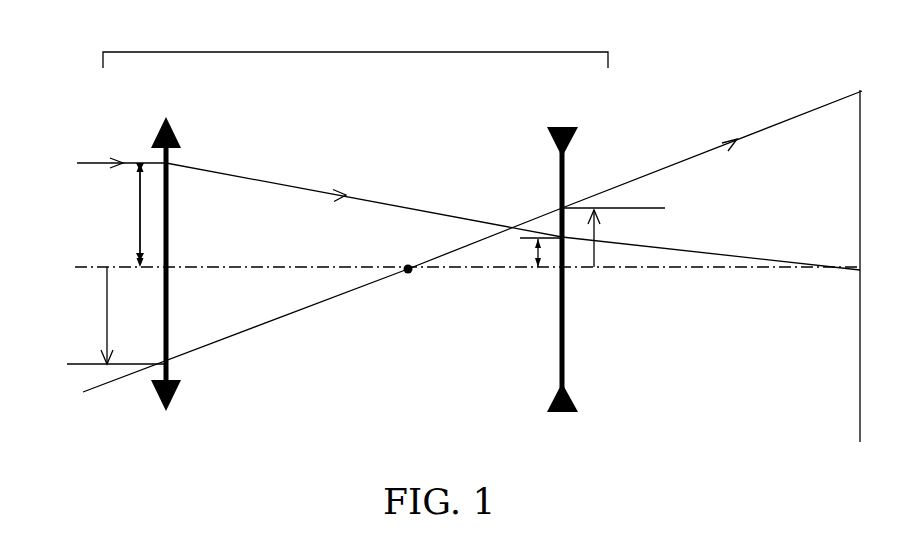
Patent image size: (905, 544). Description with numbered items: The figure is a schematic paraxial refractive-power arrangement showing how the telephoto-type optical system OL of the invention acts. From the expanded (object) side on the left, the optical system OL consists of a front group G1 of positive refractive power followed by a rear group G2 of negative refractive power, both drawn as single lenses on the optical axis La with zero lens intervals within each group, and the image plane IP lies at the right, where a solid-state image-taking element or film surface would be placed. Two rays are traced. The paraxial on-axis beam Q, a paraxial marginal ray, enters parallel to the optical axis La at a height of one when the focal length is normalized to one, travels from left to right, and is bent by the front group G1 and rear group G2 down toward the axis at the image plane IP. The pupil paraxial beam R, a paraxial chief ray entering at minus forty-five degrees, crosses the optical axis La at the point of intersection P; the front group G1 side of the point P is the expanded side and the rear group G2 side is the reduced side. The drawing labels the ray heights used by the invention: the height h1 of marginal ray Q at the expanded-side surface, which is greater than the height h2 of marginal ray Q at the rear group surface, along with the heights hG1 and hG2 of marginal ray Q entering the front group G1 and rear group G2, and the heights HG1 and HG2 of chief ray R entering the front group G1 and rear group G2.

The optical system OL is at (355, 48).
The front group G1 is at (166, 246).
The rear group G2 is at (562, 247).
The paraxial on-axis beam Q is at (110, 163).
The pupil paraxial beam R is at (461, 249).
The point of intersection P is at (410, 288).
The height of paraxial marginal ray at the expanded-side surface h1 is at (122, 215).
The height of paraxial marginal ray at the rear group h2 is at (527, 251).
The height of paraxial marginal ray entering the front group hG1 is at (206, 222).
The height of paraxial marginal ray entering the rear group hG2 is at (506, 297).
The height of paraxial chief ray entering the front group HG1 is at (92, 315).
The height of paraxial chief ray entering the rear group HG2 is at (637, 235).
The optical axis La is at (673, 272).
The image plane IP is at (858, 384).